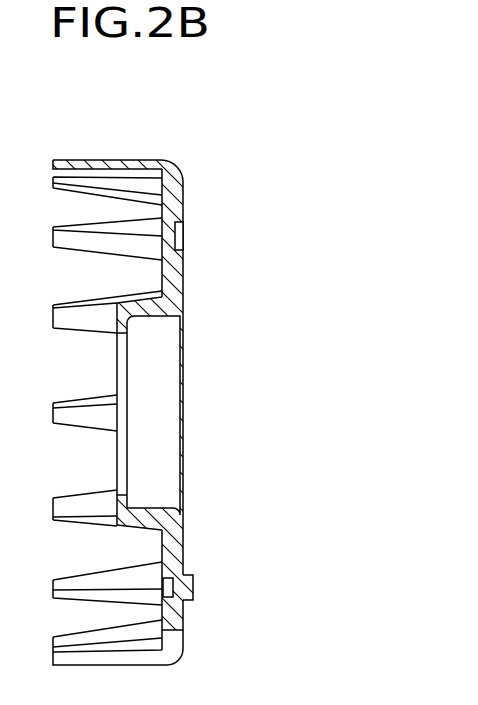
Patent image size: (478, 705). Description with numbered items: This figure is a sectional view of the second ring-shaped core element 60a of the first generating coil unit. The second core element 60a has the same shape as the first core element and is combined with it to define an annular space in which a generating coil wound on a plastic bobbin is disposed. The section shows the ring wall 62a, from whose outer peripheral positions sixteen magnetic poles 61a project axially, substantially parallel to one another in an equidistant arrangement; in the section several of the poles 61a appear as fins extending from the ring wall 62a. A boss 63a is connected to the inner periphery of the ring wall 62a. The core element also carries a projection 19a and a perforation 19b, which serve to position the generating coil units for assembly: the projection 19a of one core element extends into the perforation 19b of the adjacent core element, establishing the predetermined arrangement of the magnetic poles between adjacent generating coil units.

The second ring-shaped core element 60a is at (239, 381).
The magnetic poles 61a is at (127, 165).
The ring wall 62a is at (182, 193).
The perforation 19b is at (178, 244).
The boss 63a is at (137, 314).
The projection 19a is at (193, 592).